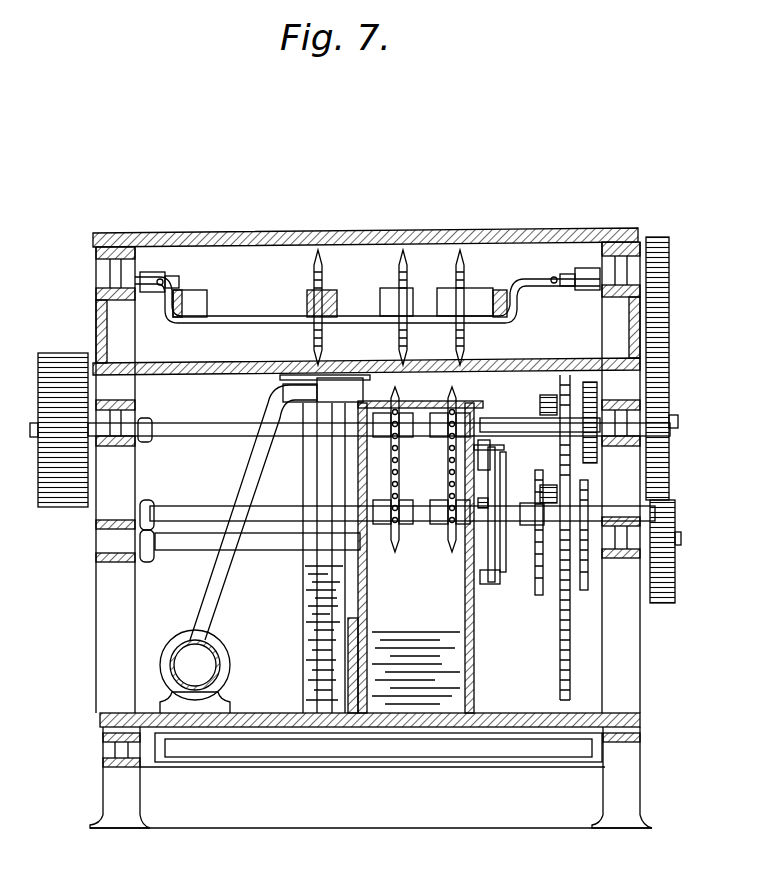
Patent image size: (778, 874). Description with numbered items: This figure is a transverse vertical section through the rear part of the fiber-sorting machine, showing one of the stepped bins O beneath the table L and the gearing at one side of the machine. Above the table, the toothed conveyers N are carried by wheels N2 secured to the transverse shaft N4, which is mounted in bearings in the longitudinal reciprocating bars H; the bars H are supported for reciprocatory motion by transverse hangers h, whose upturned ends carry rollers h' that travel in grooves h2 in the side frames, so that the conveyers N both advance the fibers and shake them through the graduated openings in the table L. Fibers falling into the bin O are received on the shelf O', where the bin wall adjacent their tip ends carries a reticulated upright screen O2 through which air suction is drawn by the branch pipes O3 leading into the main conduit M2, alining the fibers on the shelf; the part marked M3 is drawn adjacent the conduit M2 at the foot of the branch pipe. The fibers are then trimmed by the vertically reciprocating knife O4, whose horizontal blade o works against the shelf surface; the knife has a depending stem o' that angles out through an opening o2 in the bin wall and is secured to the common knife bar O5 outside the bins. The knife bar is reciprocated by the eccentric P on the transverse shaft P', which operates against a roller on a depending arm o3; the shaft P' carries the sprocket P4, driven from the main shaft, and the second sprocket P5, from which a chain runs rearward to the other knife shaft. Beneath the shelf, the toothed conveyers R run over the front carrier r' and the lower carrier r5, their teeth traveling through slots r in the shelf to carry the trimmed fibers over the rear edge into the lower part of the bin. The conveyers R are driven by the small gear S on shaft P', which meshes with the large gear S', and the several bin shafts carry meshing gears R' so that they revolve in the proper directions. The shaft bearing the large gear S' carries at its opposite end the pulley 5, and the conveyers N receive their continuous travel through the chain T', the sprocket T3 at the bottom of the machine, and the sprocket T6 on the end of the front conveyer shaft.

The pulley 5 is at (60, 355).
The toothed conveyers N is at (458, 258).
The wheels N2 is at (402, 292).
The transverse shaft N4 is at (238, 312).
The bars H is at (177, 303).
The hangers h is at (521, 330).
The rollers h' is at (575, 306).
The grooves h2 is at (136, 302).
The reticulated upright screen O2 is at (378, 400).
The branch pipes O3 is at (243, 492).
The table L is at (215, 372).
The second sprocket T3 is at (208, 432).
The sprocket T6 is at (178, 514).
The transverse shaft P' is at (250, 558).
The ring M3 is at (215, 648).
The main conduit M2 is at (200, 674).
The bins O is at (393, 557).
The carrier r' is at (390, 469).
The toothed conveyers R is at (443, 469).
The lower carrier r5 is at (445, 512).
The slots r is at (405, 386).
The horizontal blades o is at (440, 386).
The eccentrics P is at (505, 533).
The shelves O' is at (502, 421).
The vertically reciprocating knives O4 is at (490, 434).
The depending stem o' is at (506, 441).
The common knife bar O5 is at (507, 462).
The opening o2 is at (498, 493).
The depending arms o3 is at (506, 604).
The sprocket P4 is at (542, 598).
The second sprocket P5 is at (590, 598).
The chain T' is at (532, 537).
The gears R' is at (646, 416).
The large gear S' is at (676, 368).
The small gear S is at (677, 551).